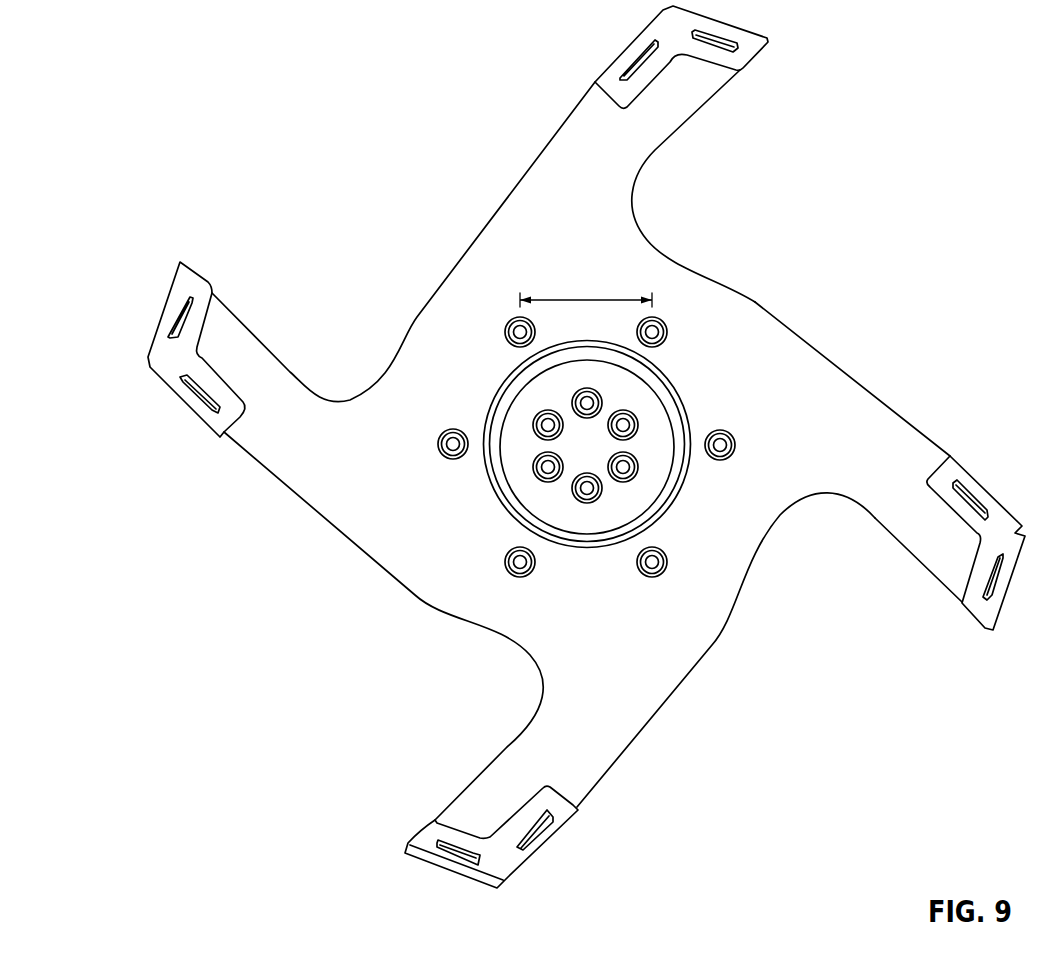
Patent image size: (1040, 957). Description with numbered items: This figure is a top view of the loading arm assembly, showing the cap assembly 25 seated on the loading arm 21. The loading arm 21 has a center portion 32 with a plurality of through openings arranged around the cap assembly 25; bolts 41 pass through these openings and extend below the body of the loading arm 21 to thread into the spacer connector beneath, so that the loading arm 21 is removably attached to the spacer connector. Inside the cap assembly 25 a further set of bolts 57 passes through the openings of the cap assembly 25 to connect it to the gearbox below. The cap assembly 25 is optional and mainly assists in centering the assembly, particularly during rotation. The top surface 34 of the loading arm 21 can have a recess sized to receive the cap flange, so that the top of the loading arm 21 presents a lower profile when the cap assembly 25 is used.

The loading arm 21 is at (704, 664).
The cap assembly 25 is at (535, 491).
The center portion 32 is at (733, 520).
The top surface 34 is at (586, 288).
The bolts 41 is at (667, 331).
The bolts 57 is at (638, 425).